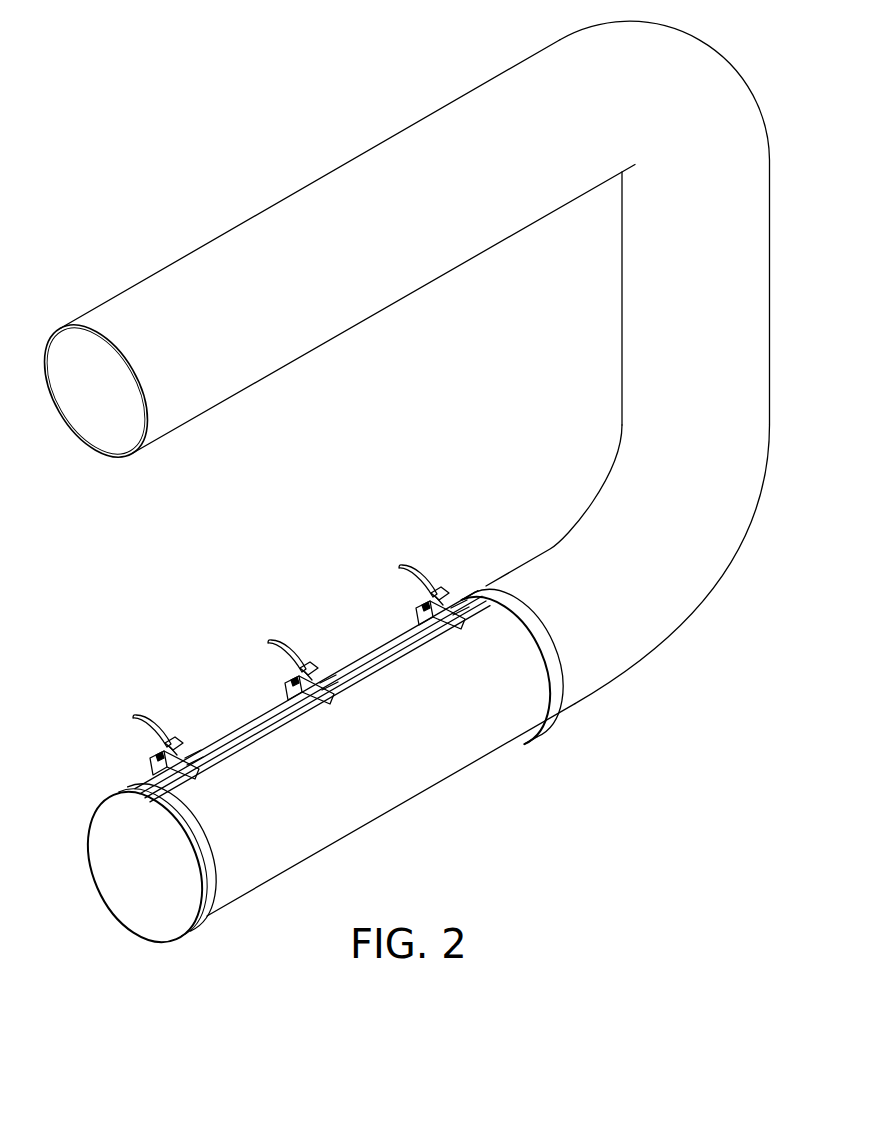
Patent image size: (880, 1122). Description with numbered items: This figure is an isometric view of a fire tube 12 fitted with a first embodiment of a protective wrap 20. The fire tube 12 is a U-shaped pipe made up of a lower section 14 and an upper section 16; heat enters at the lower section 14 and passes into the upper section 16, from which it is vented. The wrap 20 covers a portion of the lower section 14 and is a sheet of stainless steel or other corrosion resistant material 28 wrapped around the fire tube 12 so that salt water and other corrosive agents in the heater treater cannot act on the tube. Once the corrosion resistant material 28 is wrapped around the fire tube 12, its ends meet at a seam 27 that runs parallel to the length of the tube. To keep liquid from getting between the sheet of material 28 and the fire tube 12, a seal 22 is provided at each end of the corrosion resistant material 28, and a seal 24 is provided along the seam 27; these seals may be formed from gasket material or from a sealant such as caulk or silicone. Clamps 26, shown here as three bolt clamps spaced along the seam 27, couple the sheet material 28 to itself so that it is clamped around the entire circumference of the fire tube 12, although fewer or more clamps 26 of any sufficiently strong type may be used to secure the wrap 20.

The fire tube 12 is at (635, 320).
The lower section 14 is at (665, 613).
The upper section 16 is at (393, 289).
The wrap 20 is at (234, 607).
The seal 22 is at (128, 791).
The seal 24 is at (253, 718).
The clamps 26 is at (433, 592).
The seam 27 is at (390, 645).
The corrosion resistant material 28 is at (450, 758).